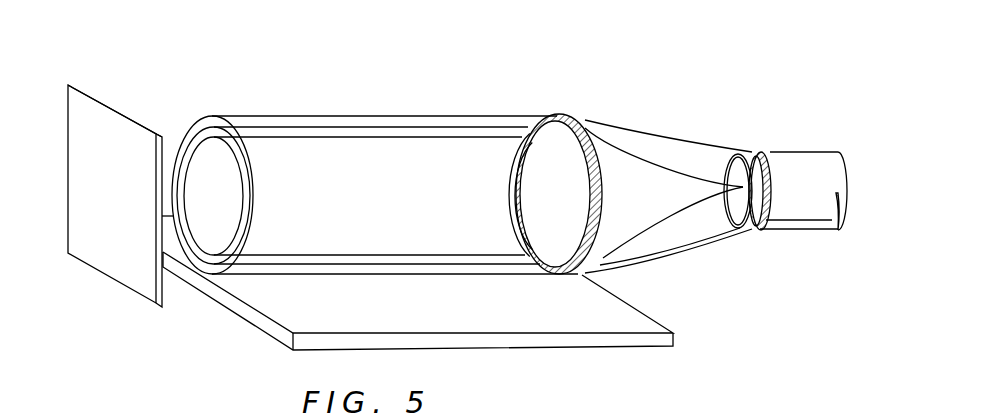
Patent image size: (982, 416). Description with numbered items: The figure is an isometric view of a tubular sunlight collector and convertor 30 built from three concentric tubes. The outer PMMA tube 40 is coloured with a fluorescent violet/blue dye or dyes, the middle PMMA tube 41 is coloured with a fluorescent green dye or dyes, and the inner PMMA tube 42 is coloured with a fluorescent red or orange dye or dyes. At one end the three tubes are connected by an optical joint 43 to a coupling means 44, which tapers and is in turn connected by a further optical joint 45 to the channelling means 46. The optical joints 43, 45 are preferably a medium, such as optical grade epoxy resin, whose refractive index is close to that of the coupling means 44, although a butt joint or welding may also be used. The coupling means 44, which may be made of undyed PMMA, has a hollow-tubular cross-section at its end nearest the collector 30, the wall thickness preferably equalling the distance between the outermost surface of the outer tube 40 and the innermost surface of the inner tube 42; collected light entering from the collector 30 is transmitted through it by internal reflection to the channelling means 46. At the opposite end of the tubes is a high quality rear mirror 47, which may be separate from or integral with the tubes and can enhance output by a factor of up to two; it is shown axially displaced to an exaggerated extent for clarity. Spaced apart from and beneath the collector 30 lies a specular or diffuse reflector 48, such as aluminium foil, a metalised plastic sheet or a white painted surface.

The tubular sunlight collector and convertor 30 is at (604, 64).
The outer PMMA tube 40 is at (198, 121).
The middle PMMA tube 41 is at (210, 117).
The inner PMMA tube 42 is at (229, 151).
The optical joint 43 is at (598, 127).
The coupling means 44 is at (674, 142).
The optical joint 45 is at (768, 160).
The channelling means 46 is at (803, 222).
The mirror 47 is at (134, 278).
The reflector 48 is at (613, 340).